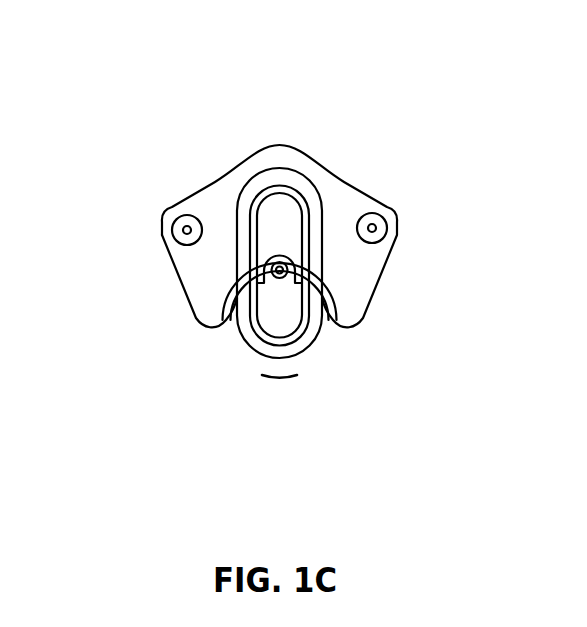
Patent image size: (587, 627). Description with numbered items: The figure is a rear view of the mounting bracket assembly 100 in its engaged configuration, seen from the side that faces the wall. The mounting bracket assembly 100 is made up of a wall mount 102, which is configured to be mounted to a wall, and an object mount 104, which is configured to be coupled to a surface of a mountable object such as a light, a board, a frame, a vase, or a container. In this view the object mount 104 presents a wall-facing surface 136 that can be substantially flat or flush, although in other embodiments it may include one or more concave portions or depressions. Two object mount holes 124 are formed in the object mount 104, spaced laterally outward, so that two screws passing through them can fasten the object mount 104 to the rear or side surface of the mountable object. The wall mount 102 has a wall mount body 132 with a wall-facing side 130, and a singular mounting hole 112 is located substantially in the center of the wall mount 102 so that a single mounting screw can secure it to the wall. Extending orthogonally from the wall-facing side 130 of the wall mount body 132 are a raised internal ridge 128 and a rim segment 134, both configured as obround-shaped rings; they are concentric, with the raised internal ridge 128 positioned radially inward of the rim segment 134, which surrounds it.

The mounting bracket assembly 100 is at (142, 58).
The wall mount 102 is at (298, 401).
The object mount 104 is at (189, 179).
The mounting hole 112 is at (288, 270).
The object mount holes 124 is at (173, 231).
The raised internal ridge 128 is at (307, 318).
The wall-facing side 130 is at (231, 363).
The wall mount body 132 is at (305, 352).
The rim segment 134 is at (278, 377).
The wall-facing surface 136 is at (192, 280).